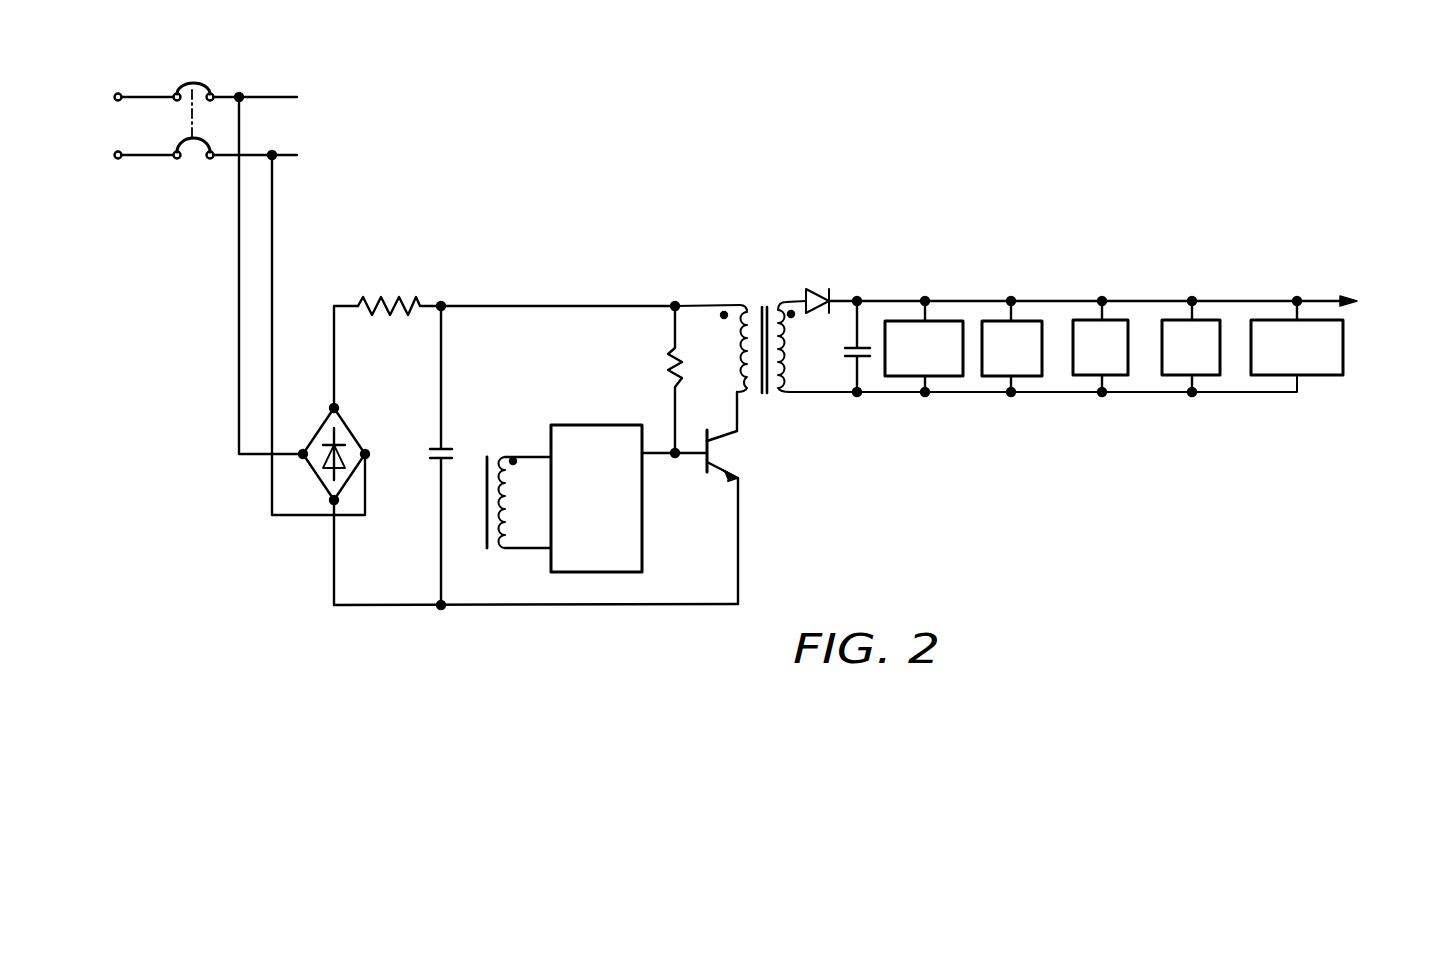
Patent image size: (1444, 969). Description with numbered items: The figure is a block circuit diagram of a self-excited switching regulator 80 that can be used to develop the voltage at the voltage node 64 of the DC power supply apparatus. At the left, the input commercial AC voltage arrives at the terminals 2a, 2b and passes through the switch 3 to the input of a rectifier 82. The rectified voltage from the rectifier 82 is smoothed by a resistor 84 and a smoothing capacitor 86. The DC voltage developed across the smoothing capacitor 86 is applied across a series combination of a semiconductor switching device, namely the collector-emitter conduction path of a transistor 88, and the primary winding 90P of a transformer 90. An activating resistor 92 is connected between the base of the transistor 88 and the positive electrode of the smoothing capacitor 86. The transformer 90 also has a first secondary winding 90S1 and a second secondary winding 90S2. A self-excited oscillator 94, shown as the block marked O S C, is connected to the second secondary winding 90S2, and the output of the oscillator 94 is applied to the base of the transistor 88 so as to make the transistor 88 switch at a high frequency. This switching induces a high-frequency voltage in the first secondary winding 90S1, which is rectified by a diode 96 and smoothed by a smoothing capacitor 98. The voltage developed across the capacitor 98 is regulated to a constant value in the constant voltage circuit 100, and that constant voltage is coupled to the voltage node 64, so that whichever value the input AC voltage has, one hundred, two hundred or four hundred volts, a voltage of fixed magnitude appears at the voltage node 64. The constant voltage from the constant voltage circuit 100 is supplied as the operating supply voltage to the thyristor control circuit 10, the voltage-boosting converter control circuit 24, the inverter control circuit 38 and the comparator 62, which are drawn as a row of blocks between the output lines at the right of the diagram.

The AC power input terminal 2a is at (120, 95).
The AC power input terminal 2b is at (120, 158).
The switch 3 is at (221, 172).
The rectifier 82 is at (346, 430).
The resistor 84 is at (421, 303).
The smoothing capacitor 86 is at (456, 457).
The second secondary winding 90S2 is at (515, 543).
The self-excited oscillator 94 is at (643, 519).
The activating resistor 92 is at (668, 368).
The transistor 88 is at (746, 498).
The self-excited switching regulator 80 is at (750, 269).
The transformer 90 is at (758, 331).
The primary winding 90P is at (742, 366).
The first secondary winding 90S1 is at (790, 368).
The diode 96 is at (818, 288).
The smoothing capacitor 98 is at (848, 360).
The constant voltage circuit 100 is at (950, 378).
The thyristor control circuit 10 is at (1027, 378).
The voltage-boosting converter control circuit 24 is at (1115, 378).
The inverter control circuit 38 is at (1176, 378).
The comparator 62 is at (1273, 378).
The voltage node 64 is at (1397, 301).